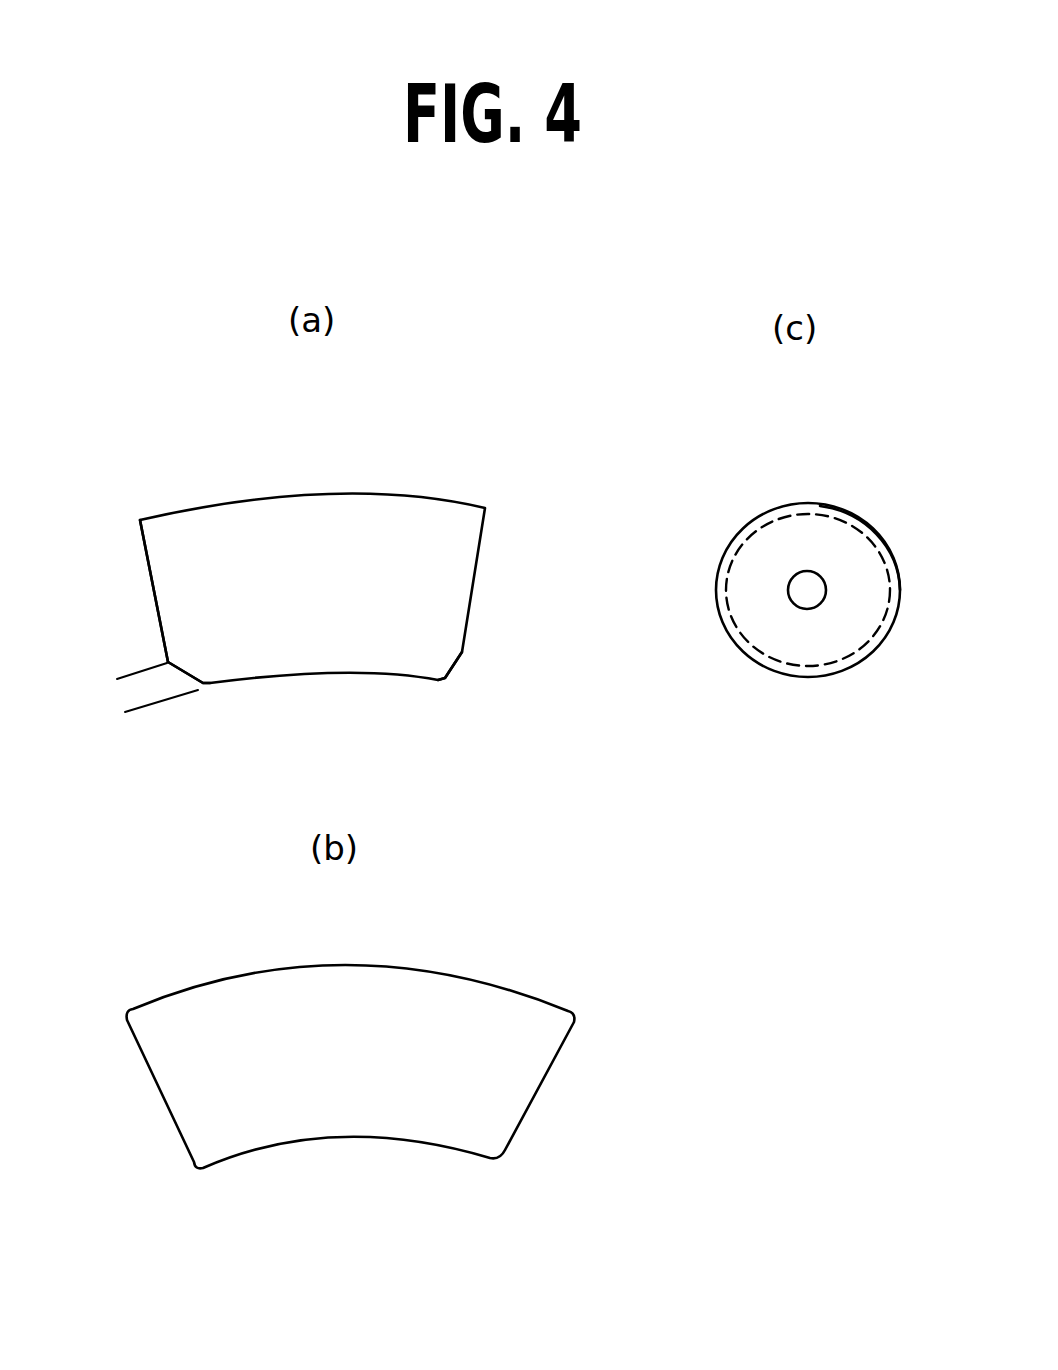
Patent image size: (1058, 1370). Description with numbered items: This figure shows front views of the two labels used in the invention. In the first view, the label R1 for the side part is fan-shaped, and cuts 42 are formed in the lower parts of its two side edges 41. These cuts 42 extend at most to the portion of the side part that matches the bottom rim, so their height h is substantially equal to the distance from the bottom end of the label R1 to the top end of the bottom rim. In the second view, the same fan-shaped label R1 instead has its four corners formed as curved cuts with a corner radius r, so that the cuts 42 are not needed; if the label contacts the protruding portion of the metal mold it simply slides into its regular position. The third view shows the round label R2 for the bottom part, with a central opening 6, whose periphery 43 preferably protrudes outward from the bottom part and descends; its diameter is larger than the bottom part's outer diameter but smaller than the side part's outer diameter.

The side edges 41 is at (156, 598).
The cuts 42 is at (178, 678).
The periphery 43 is at (762, 658).
The shaft hole 6 is at (812, 595).
The label for the side part R1 is at (152, 538).
The label for the bottom part R2 is at (870, 522).
The height of the cuts h is at (117, 643).
The corner radius r is at (135, 1023).